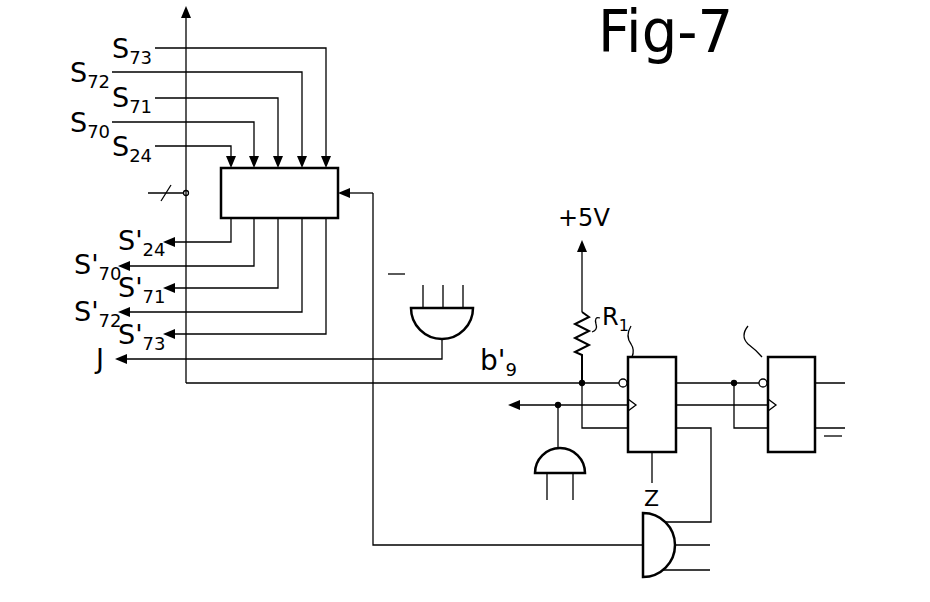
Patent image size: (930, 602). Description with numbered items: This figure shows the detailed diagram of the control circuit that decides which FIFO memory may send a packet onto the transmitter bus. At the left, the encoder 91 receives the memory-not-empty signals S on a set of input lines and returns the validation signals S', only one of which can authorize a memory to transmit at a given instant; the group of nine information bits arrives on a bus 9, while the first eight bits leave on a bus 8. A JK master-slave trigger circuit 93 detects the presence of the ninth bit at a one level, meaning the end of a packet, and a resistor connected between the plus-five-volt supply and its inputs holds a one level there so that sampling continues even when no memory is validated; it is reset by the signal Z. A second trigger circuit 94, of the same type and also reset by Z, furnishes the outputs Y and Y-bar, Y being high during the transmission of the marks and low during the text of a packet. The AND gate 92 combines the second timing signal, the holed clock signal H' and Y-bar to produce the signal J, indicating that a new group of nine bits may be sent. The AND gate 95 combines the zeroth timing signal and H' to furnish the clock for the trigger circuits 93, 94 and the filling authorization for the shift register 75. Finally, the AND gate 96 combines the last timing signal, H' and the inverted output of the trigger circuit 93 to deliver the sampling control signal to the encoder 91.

The bus b1'-b8' 8 is at (190, 40).
The bus b1'-b9' 9 is at (130, 185).
The encoder 91 is at (338, 166).
The AND gate 92 is at (426, 338).
The trigger circuit 93 is at (642, 357).
The trigger circuit 94 is at (806, 357).
The AND gate 95 is at (537, 453).
The AND gate 96 is at (648, 537).
The shift register 75 is at (545, 405).